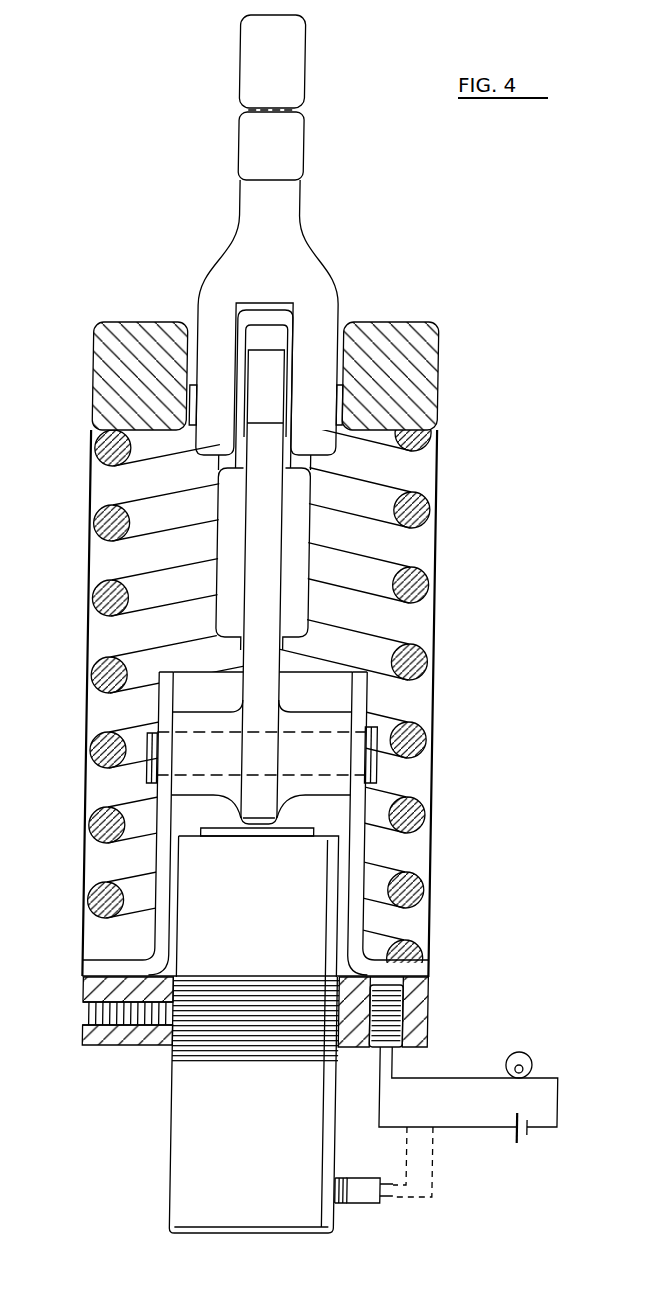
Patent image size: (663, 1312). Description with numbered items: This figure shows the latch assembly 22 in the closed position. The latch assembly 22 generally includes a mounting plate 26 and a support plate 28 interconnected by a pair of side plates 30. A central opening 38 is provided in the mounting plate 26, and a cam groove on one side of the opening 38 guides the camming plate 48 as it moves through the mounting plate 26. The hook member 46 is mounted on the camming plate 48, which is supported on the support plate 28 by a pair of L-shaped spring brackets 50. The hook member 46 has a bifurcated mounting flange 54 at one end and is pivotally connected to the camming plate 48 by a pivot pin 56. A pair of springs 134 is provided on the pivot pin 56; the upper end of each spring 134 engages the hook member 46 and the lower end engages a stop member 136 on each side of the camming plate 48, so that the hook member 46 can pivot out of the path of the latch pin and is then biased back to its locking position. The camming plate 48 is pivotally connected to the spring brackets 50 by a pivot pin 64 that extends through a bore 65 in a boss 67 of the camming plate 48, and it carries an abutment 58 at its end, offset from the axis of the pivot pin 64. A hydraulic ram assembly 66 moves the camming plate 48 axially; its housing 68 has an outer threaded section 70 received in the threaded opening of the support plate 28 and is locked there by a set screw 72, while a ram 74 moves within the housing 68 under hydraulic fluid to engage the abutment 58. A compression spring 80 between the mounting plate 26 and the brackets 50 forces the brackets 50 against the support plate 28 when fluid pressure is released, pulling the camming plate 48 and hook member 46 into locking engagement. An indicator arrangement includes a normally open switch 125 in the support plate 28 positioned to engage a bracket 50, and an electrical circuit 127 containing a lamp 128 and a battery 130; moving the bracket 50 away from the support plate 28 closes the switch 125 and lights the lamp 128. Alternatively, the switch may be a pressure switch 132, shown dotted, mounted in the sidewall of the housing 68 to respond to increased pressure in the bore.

The latch assembly 22 is at (392, 281).
The mounting plate 26 is at (383, 326).
The support plate 28 is at (110, 1045).
The side plates 30 is at (445, 534).
The central opening 38 is at (348, 326).
The hook member 46 is at (241, 183).
The camming plate 48 is at (268, 573).
The L-shaped spring brackets 50 is at (170, 803).
The bifurcated mounting flange 54 is at (241, 376).
The pivot pin 56 is at (349, 404).
The abutment 58 is at (271, 825).
The pivot pin 64 is at (391, 768).
The bore 65 is at (216, 722).
The hydraulic ram assembly 66 is at (190, 1149).
The boss 67 is at (323, 722).
The housing 68 is at (191, 1200).
The outer threaded section 70 is at (357, 1060).
The set screw 72 is at (168, 1025).
The ram 74 is at (314, 837).
The compression spring 80 is at (439, 585).
The normally open switch 125 is at (420, 1010).
The electrical circuit 127 is at (447, 1073).
The lamp 128 is at (548, 1056).
The battery 130 is at (549, 1135).
The pressure switch 132 is at (383, 1204).
The springs 134 is at (247, 331).
The stop member 136 is at (226, 498).